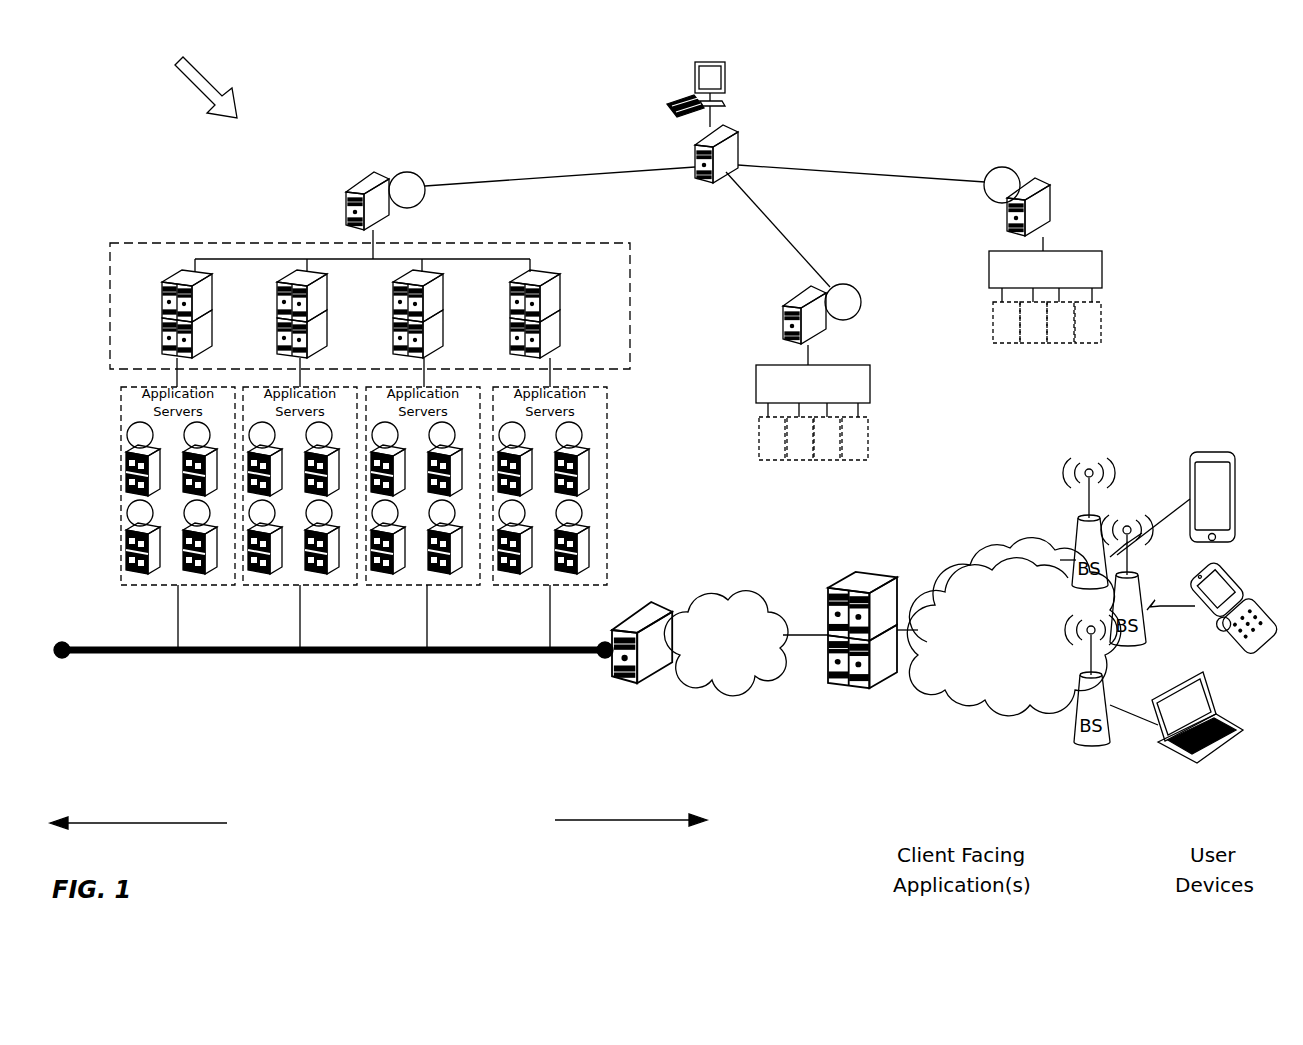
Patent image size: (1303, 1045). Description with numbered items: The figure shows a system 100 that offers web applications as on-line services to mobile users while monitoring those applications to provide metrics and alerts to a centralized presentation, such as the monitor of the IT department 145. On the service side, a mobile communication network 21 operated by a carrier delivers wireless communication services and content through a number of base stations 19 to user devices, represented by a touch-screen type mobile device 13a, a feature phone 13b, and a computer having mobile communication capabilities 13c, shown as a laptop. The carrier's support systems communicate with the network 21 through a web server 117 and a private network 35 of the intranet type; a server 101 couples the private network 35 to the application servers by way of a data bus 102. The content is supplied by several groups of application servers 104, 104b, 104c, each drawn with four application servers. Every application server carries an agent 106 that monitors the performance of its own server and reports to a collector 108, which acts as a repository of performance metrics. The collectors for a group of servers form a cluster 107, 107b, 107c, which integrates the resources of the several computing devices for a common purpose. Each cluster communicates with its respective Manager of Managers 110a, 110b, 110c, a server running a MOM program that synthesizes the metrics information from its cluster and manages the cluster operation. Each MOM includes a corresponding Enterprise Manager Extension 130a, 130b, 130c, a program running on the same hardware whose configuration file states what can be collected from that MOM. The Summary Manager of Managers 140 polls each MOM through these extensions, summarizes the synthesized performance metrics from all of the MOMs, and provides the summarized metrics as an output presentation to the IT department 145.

The system 100 is at (193, 76).
The IT department 145 is at (694, 87).
The Summary Manager of Managers 140 is at (697, 140).
The Manager of Managers 110a is at (347, 190).
The Manager of Managers 110b is at (790, 300).
The Manager of Managers 110c is at (1056, 198).
The Enterprise Manager Extension 130a is at (423, 200).
The Enterprise Manager Extension 130b is at (858, 312).
The Enterprise Manager Extension 130c is at (990, 198).
The cluster 107 is at (110, 295).
The cluster 107b is at (756, 397).
The cluster 107c is at (989, 280).
The collector 108 is at (212, 303).
The agent 106 is at (125, 440).
The group of application servers 104 is at (339, 489).
The group of application servers 104b is at (857, 460).
The group of application servers 104c is at (1090, 343).
The data bus 102 is at (518, 653).
The server 101 is at (640, 600).
The private network 35 is at (722, 600).
The web server 117 is at (866, 690).
The mobile communication network 21 is at (985, 565).
The base station 19 is at (1078, 530).
The touch-screen type mobile device 13a is at (1235, 480).
The feature phone 13b is at (1250, 594).
The computer having mobile communication capabilities 13c is at (1220, 705).